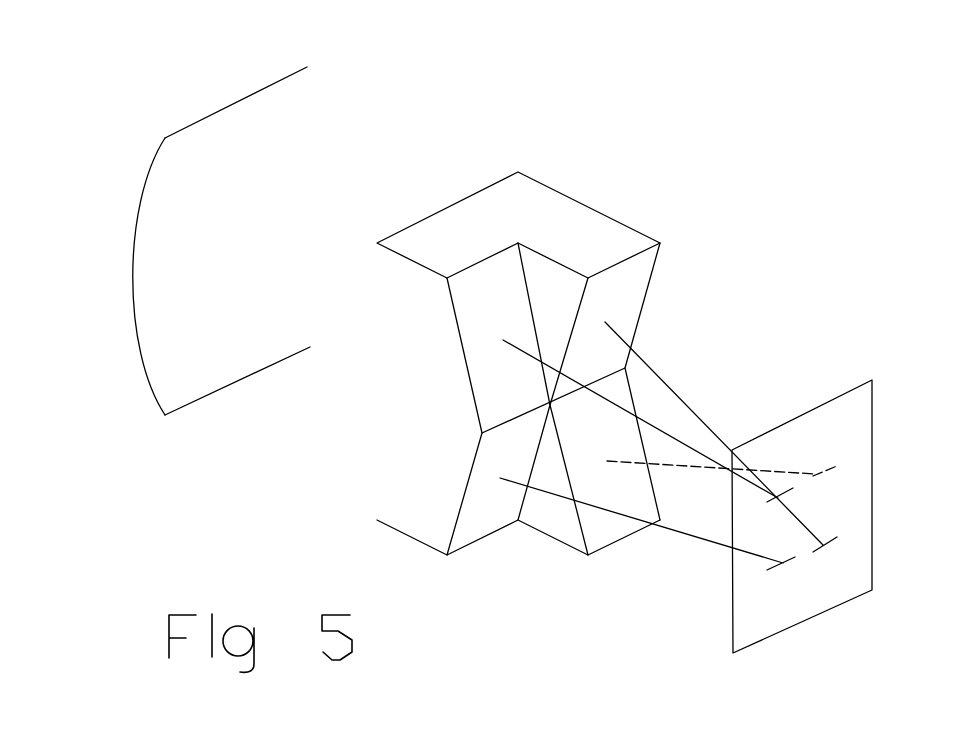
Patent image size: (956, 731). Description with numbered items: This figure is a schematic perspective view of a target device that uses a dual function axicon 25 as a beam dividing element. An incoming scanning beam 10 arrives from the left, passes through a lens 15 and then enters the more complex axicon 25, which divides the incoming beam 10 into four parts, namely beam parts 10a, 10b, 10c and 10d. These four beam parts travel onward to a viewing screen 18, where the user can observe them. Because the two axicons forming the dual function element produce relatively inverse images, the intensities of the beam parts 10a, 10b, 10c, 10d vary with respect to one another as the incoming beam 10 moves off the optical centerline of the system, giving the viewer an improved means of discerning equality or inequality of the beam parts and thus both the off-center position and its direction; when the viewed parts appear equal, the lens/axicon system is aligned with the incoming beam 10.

The incoming beam 10 is at (27, 138).
The cylindrical lens 15 is at (207, 450).
The axicon 25 is at (610, 175).
The viewing screen 18 is at (665, 670).
The beam part 10a is at (513, 360).
The beam part 10b is at (679, 540).
The beam part 10c is at (670, 457).
The beam part 10d is at (707, 407).